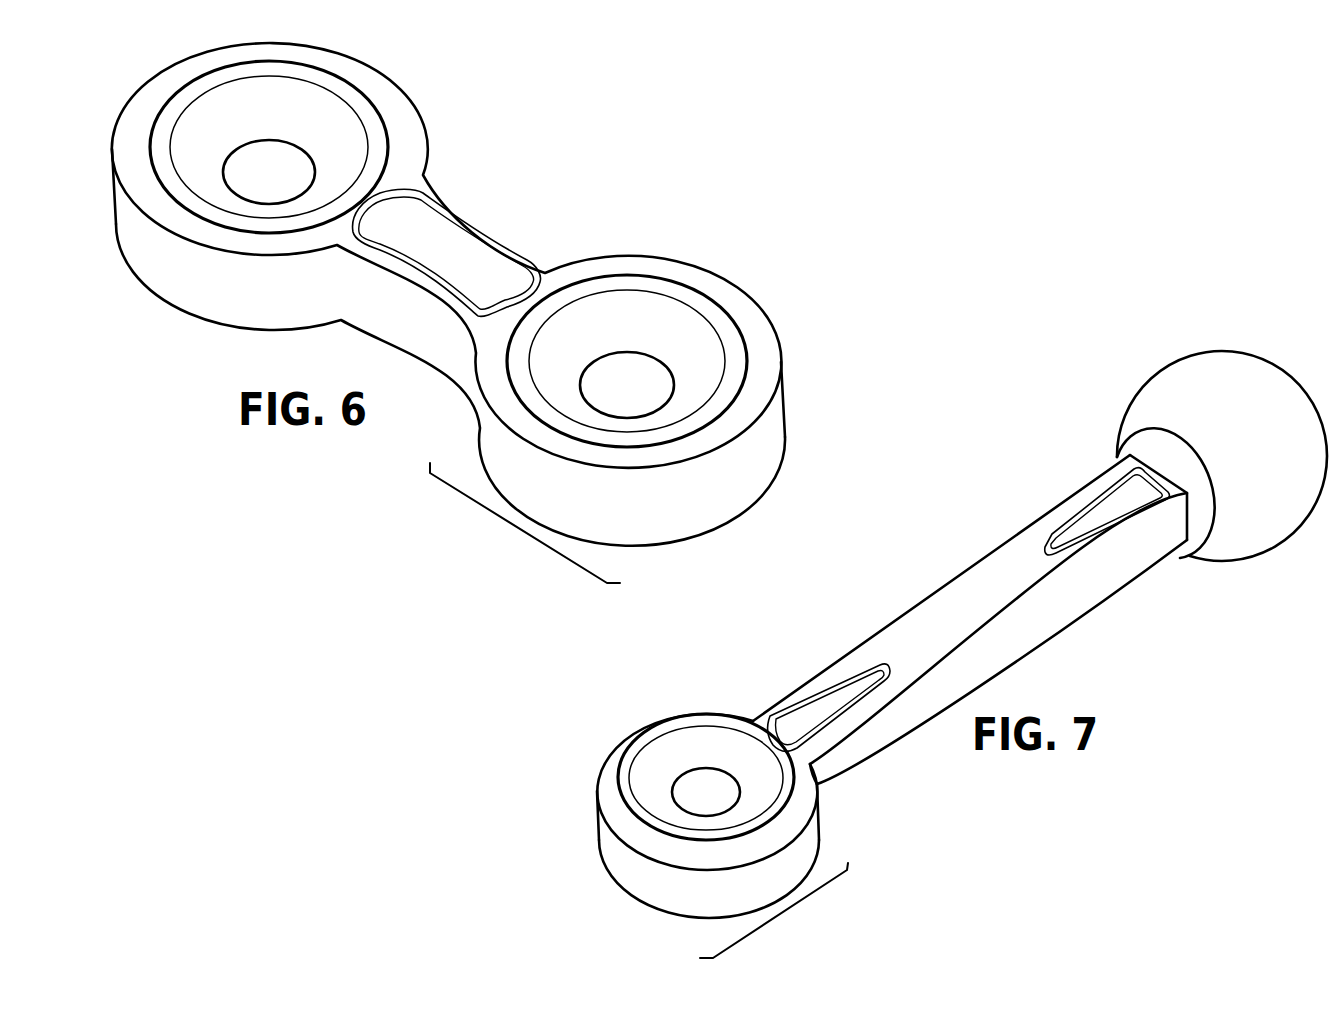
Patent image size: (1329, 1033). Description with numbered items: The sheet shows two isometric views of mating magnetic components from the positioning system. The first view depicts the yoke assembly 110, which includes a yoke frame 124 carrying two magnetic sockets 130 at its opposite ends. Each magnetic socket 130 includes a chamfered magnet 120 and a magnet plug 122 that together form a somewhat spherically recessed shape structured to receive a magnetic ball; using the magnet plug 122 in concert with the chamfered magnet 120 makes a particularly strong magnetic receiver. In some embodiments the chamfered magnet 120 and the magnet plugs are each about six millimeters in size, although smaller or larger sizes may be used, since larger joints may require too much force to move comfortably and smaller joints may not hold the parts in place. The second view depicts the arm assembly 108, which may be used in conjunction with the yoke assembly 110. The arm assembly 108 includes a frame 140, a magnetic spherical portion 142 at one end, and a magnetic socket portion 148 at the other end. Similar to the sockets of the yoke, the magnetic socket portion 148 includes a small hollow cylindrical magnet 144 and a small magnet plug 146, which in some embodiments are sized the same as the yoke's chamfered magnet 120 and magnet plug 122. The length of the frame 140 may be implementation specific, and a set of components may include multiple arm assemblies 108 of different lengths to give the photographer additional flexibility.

In FIG. 6, the yoke assembly 110 is at (524, 171).
In FIG. 6, the chamfered magnet 120 is at (622, 276).
In FIG. 6, the magnet plug 122 is at (626, 362).
In FIG. 6, the yoke frame 124 is at (558, 257).
In FIG. 6, the magnetic socket 130 is at (513, 526).
In FIG. 7, the arm assembly 108 is at (931, 565).
In FIG. 7, the frame 140 is at (1013, 648).
In FIG. 7, the magnetic spherical portion 142 is at (1293, 376).
In FIG. 7, the hollow cylindrical magnet 144 is at (706, 716).
In FIG. 7, the magnet plug 146 is at (705, 786).
In FIG. 7, the magnetic socket portion 148 is at (782, 918).